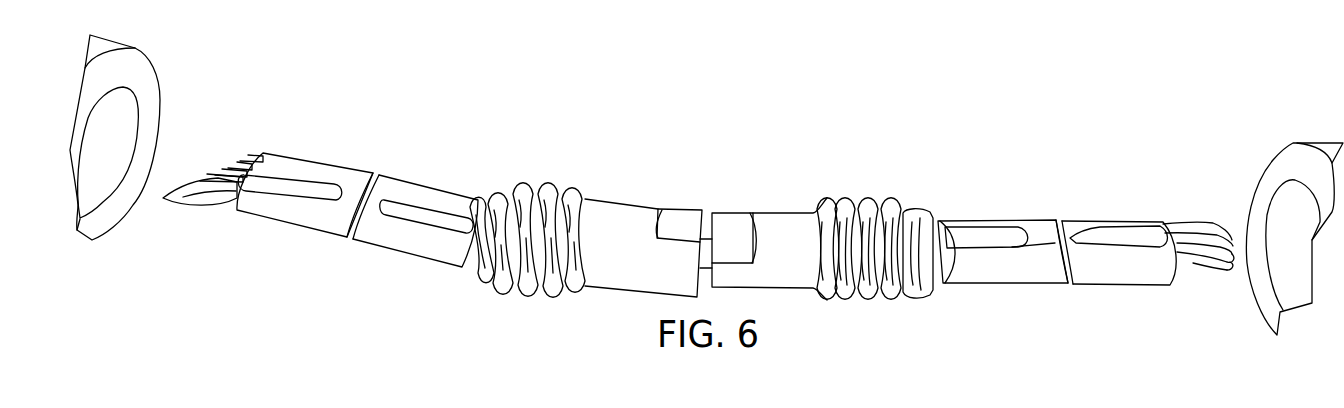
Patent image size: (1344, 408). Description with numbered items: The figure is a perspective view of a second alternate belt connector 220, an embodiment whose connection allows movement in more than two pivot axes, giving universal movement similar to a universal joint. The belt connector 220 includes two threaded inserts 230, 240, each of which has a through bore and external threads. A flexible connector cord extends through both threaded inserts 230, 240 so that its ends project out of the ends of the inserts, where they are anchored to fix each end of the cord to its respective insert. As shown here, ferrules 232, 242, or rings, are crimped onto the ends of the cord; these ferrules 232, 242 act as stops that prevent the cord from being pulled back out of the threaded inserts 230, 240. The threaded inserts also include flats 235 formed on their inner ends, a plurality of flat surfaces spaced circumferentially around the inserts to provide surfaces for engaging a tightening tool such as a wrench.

The belt connector 220 is at (783, 137).
The threaded insert 230 is at (551, 183).
The ferrule 232 is at (435, 182).
The flats 235 is at (728, 219).
The threaded insert 240 is at (885, 211).
The ferrule 242 is at (1078, 219).